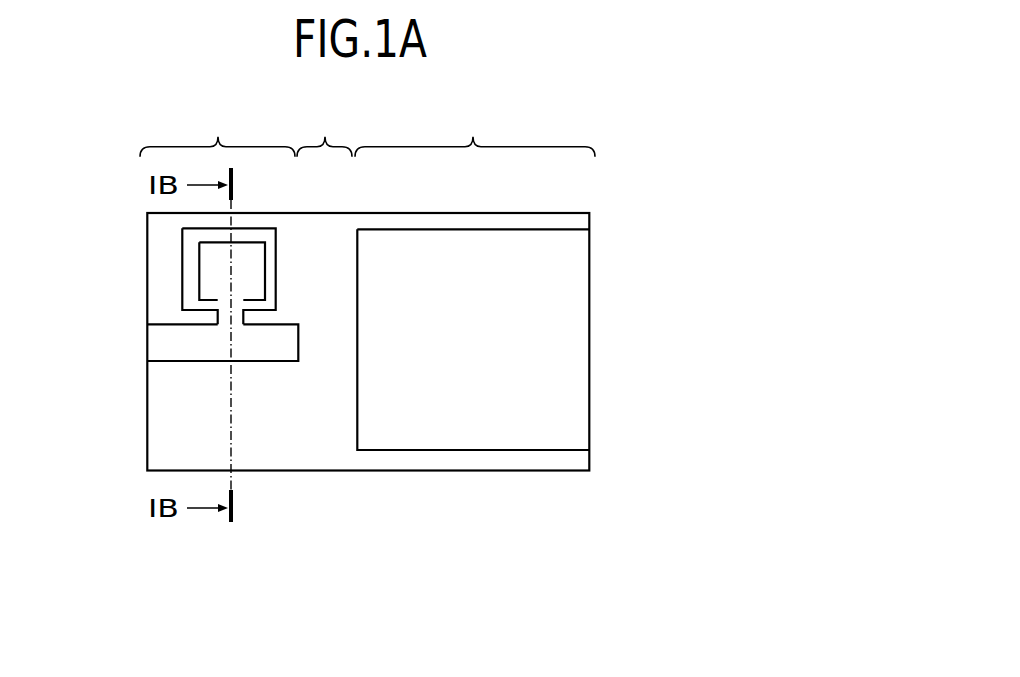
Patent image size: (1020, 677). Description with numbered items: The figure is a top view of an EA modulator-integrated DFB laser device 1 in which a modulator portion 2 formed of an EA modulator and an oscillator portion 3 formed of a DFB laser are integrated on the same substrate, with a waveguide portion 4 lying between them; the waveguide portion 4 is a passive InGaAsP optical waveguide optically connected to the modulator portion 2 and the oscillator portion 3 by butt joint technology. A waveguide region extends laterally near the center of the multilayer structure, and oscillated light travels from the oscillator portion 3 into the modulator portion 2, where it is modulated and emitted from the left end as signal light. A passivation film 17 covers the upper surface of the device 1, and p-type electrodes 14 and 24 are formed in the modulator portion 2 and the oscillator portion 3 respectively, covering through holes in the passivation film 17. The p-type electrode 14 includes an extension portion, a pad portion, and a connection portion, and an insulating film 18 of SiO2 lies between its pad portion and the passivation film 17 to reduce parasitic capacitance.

The EA modulator-integrated DFB laser device 1 is at (631, 310).
The modulator portion 2 is at (217, 130).
The oscillator portion 3 is at (475, 130).
The waveguide portion 4 is at (324, 130).
The p-type electrode 14 is at (168, 347).
The passivation film 17 is at (190, 422).
The insulating film 18 is at (190, 273).
The p-type electrode 24 is at (563, 400).